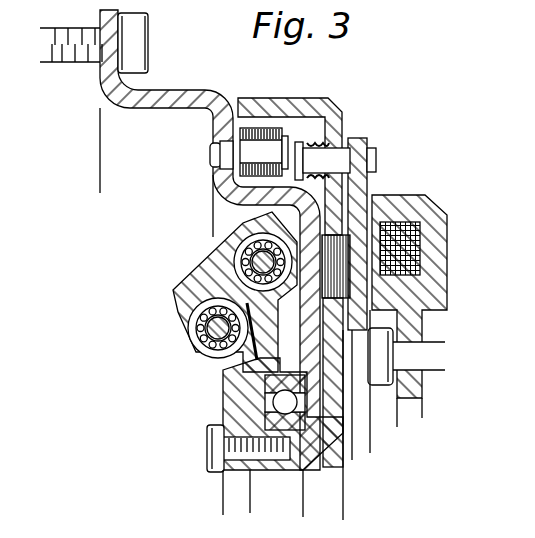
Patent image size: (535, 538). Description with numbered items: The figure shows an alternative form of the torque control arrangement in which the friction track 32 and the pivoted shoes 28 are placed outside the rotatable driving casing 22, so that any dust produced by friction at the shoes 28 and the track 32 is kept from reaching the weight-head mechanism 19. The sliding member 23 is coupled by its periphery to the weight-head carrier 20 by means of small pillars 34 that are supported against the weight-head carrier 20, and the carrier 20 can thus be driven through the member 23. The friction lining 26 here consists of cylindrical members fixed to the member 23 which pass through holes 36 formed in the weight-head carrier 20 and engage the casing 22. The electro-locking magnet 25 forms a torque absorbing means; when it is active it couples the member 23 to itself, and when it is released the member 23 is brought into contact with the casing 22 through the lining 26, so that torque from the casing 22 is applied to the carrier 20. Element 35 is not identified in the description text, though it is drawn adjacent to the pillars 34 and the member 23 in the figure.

The weight-head mechanism 19 is at (207, 268).
The weight-head carrier 20 is at (273, 472).
The rotatable driving casing 22 is at (176, 98).
The sliding member 23 is at (358, 183).
The electro-locking magnet 25 is at (413, 242).
The friction lining 26 is at (357, 283).
The shoes 28 is at (242, 126).
The friction track 32 is at (270, 112).
The small pillars 34 is at (358, 140).
The spring bolt 35 is at (310, 143).
The holes 36 is at (340, 302).